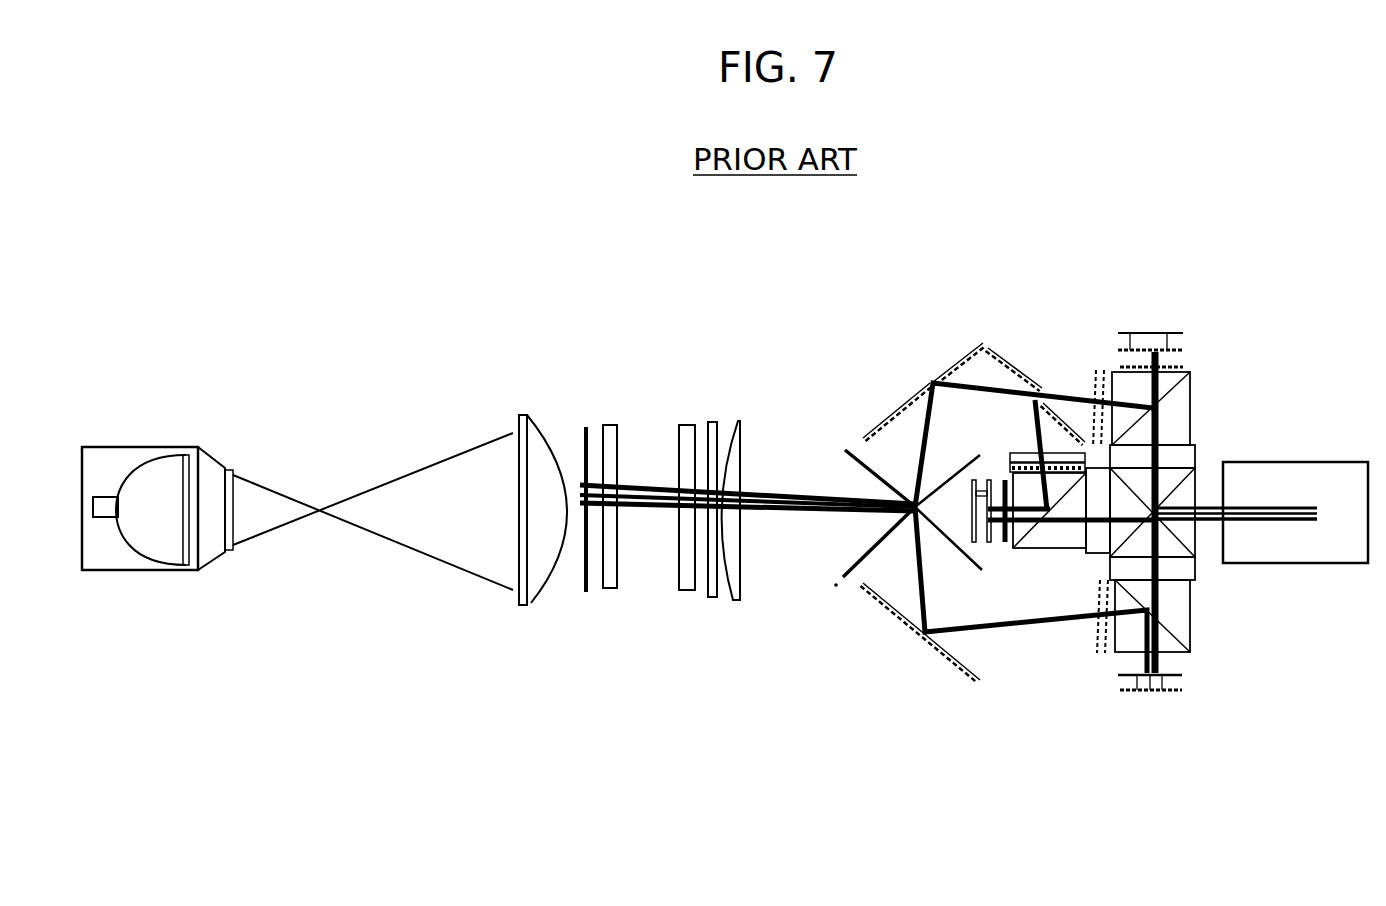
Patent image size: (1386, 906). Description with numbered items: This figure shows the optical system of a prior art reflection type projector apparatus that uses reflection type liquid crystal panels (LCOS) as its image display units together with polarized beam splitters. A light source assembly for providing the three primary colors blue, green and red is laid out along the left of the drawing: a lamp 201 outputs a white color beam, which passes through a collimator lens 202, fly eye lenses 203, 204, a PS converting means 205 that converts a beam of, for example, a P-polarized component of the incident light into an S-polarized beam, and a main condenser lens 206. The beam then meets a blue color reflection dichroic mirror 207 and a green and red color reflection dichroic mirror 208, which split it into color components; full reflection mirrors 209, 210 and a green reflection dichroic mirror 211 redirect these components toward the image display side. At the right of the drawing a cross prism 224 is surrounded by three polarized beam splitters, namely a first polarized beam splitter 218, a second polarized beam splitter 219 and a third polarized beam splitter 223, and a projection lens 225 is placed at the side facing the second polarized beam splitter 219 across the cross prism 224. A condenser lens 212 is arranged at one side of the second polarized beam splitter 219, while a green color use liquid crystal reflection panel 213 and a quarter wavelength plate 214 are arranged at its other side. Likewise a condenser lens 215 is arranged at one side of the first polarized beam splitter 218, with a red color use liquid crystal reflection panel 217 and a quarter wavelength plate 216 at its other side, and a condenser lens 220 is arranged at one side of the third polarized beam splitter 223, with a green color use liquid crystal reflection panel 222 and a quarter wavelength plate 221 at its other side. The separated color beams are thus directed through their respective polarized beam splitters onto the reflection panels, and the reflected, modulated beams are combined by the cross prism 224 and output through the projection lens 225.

The lamp 201 is at (152, 483).
The collimator lens 202 is at (527, 603).
The fly eye lens 203 is at (600, 570).
The fly eye lens 204 is at (679, 570).
The PS converting means 205 is at (710, 600).
The main condenser lens 206 is at (735, 605).
The blue color reflection dichroic mirror 207 is at (845, 450).
The green and red color reflection dichroic mirror 208 is at (836, 585).
The full reflection mirror 209 is at (897, 410).
The full reflection mirror 210 is at (903, 618).
The green reflection dichroic mirror 211 is at (990, 347).
The condenser lens 212 is at (1056, 453).
The green color use liquid crystal reflection panel 213 is at (990, 542).
The 1/4 wavelength plate 214 is at (1008, 542).
The condenser lens 215 is at (1098, 372).
The 1/4 wavelength plate 216 is at (1130, 366).
The red color use liquid crystal reflection panel 217 is at (1158, 333).
The first polarized beam splitter 218 is at (1195, 385).
The second polarized beam splitter 219 is at (1055, 540).
The condenser lens 220 is at (1100, 655).
The 1/4 wavelength plate 221 is at (1178, 658).
The green color use liquid crystal reflection panel 222 is at (1165, 693).
The third polarized beam splitter 223 is at (1185, 607).
The cross prism 224 is at (1183, 483).
The projection lens 225 is at (1272, 477).